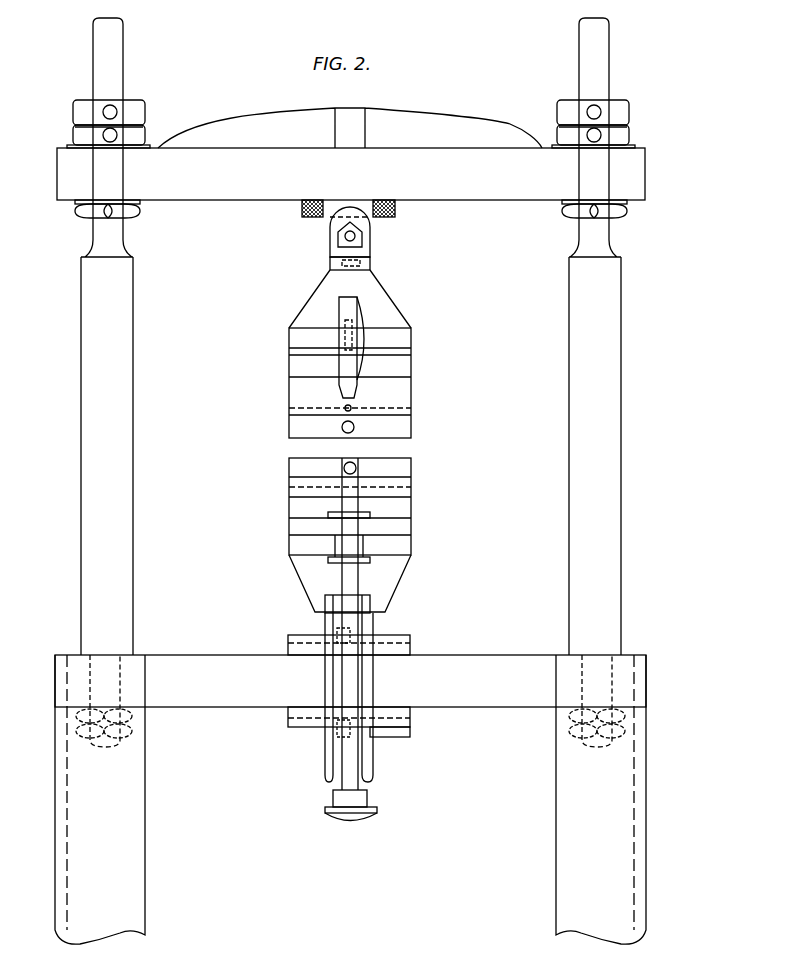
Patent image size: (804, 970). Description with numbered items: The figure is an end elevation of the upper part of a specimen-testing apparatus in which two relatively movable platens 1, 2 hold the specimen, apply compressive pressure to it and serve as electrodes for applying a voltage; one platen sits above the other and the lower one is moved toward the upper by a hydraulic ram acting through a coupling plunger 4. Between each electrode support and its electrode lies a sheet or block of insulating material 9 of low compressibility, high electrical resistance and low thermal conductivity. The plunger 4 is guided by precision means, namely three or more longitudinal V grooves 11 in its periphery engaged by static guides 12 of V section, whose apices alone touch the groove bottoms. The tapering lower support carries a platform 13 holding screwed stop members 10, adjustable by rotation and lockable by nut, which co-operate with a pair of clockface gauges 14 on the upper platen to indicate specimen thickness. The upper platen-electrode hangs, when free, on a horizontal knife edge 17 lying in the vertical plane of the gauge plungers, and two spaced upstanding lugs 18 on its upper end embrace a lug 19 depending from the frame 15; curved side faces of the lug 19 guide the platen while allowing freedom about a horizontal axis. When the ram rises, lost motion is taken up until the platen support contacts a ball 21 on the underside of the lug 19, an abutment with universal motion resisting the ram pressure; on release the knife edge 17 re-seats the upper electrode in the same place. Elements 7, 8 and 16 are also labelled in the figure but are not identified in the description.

The platen 1 is at (403, 430).
The platen 2 is at (403, 466).
The coupling plunger 4 is at (373, 751).
The upper clamping plate 7 is at (300, 338).
The lower clamping plate 8 is at (296, 544).
The insulating material 9 is at (296, 369).
The screwed stop members 10 is at (360, 573).
The longitudinal V grooves 11 is at (372, 622).
The static guides 12 is at (398, 637).
The platform 13 is at (403, 527).
The clockface gauges 14 is at (360, 316).
The frame 15 is at (502, 163).
The pin hole 16 is at (352, 405).
The knife edge 17 is at (352, 237).
The upstanding lugs 18 is at (330, 249).
The lug 19 is at (362, 223).
The ball 21 is at (367, 262).